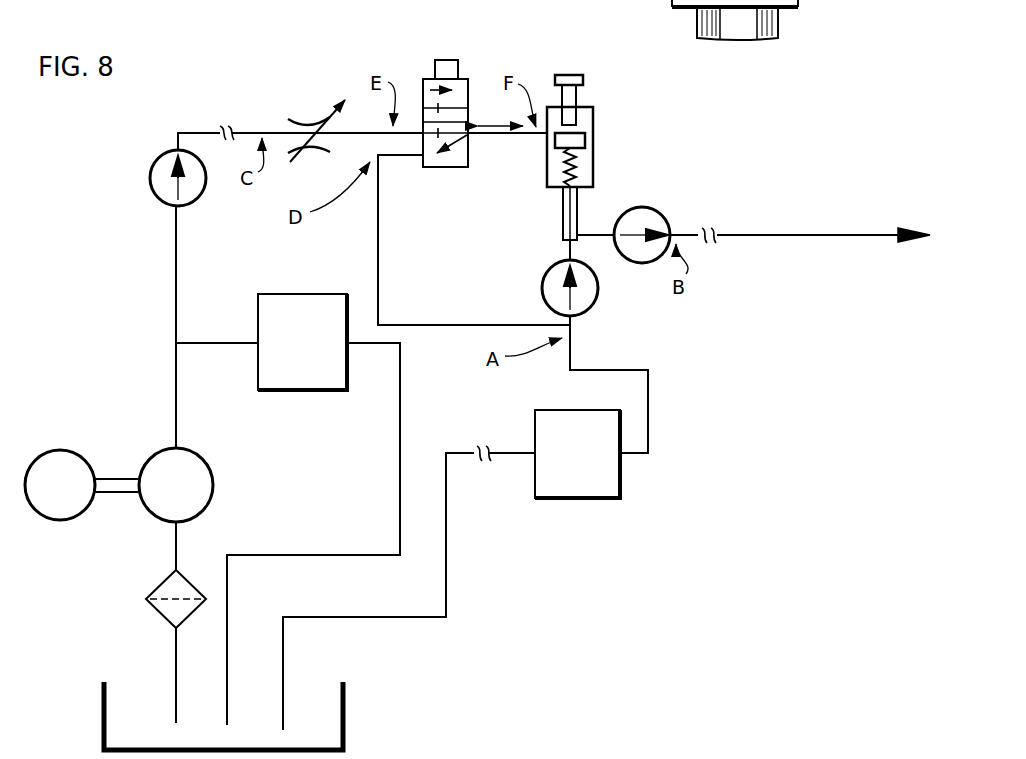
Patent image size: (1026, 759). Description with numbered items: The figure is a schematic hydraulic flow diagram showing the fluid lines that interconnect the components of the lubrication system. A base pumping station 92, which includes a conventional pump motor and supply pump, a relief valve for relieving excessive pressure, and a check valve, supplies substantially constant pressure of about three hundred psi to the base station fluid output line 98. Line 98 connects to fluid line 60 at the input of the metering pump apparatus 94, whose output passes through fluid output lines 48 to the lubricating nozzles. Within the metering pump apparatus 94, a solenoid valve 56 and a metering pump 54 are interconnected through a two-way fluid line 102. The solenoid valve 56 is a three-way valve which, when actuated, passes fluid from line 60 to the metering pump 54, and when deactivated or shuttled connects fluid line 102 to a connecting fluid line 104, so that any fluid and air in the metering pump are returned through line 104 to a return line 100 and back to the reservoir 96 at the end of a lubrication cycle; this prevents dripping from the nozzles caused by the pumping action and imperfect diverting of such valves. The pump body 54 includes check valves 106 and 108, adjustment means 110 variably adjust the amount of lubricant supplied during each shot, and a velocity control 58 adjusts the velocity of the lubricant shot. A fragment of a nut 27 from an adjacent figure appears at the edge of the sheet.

The nut 27 is at (772, 28).
The fluid output lines 48 is at (729, 234).
The metering pump 54 is at (594, 121).
The solenoid valve 56 is at (468, 80).
The velocity control 58 is at (314, 118).
The fluid line 60 is at (238, 132).
The base pumping station 92 is at (148, 388).
The metering pump apparatus 94 is at (536, 84).
The reservoir 96 is at (104, 684).
The base station fluid output line 98 is at (200, 132).
The return line 100 is at (620, 370).
The two-way fluid line 102 is at (512, 137).
The connecting fluid line 104 is at (392, 252).
The check valve 106 is at (645, 207).
The check valve 108 is at (542, 285).
The adjustment means 110 is at (566, 74).